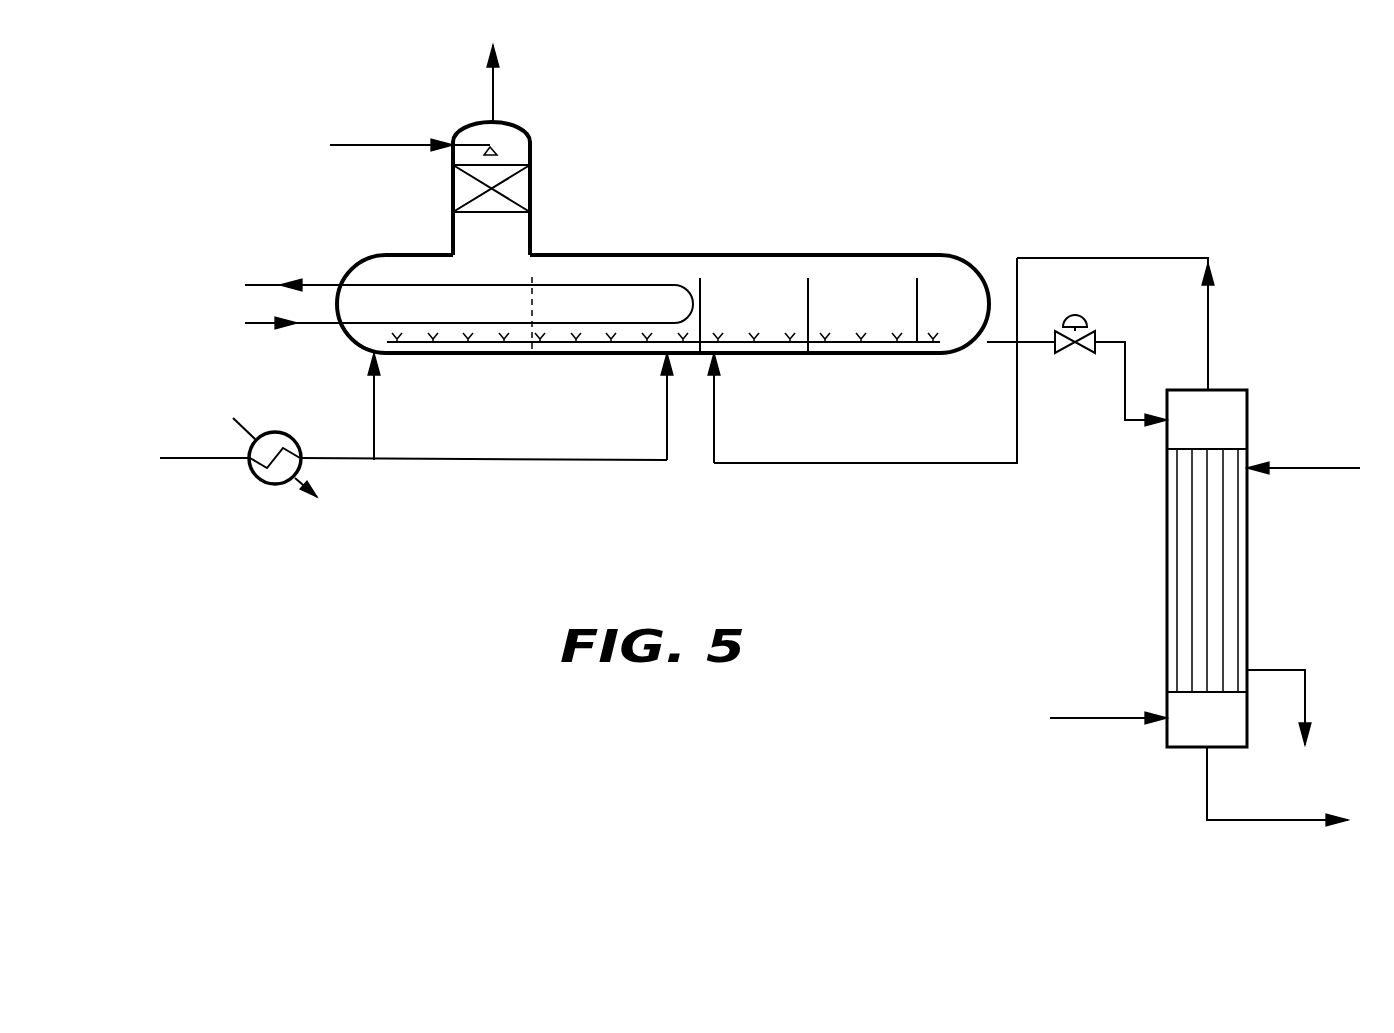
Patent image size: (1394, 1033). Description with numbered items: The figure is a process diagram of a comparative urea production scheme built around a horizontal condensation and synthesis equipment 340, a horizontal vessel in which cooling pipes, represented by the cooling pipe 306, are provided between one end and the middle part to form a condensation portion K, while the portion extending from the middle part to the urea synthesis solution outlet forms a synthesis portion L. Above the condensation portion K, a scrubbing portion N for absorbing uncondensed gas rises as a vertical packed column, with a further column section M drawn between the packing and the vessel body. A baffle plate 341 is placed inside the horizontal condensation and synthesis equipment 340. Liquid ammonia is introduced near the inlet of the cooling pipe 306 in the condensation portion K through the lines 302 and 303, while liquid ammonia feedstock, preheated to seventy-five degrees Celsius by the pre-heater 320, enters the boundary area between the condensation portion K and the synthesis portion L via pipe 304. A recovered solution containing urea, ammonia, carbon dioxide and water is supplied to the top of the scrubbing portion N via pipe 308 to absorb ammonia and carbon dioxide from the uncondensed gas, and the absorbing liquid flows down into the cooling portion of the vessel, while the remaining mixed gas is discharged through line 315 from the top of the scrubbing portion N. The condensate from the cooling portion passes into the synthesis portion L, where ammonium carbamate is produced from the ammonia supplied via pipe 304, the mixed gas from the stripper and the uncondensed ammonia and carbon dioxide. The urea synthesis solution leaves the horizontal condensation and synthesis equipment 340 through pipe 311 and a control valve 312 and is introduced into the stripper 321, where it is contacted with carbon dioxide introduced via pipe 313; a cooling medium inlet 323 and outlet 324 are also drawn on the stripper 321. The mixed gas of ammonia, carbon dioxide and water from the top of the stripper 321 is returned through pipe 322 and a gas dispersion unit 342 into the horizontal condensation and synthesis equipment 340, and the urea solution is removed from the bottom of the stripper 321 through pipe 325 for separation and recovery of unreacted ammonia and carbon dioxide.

The line 302 is at (347, 460).
The line 303 is at (374, 405).
The pipe 304 is at (640, 462).
The cooling pipe 306 is at (318, 322).
The pipe 308 is at (368, 145).
The pipe 311 is at (993, 345).
The control valve 312 is at (1065, 355).
The pipe 313 is at (1105, 716).
The line 315 is at (493, 88).
The pre-heater 320 is at (262, 483).
The stripper 321 is at (1248, 560).
The pipe 322 is at (1127, 258).
The cooling medium inlet 323 is at (1333, 465).
The cooling medium outlet 324 is at (1297, 668).
The pipe 325 is at (1270, 822).
The horizontal condensation and synthesis equipment 340 is at (763, 255).
The baffle plate 341 is at (808, 298).
The gas dispersion unit 342 is at (766, 343).
The scrubbing portion N is at (530, 178).
The column section M is at (500, 247).
The condensation portion K is at (500, 352).
The synthesis portion L is at (897, 353).